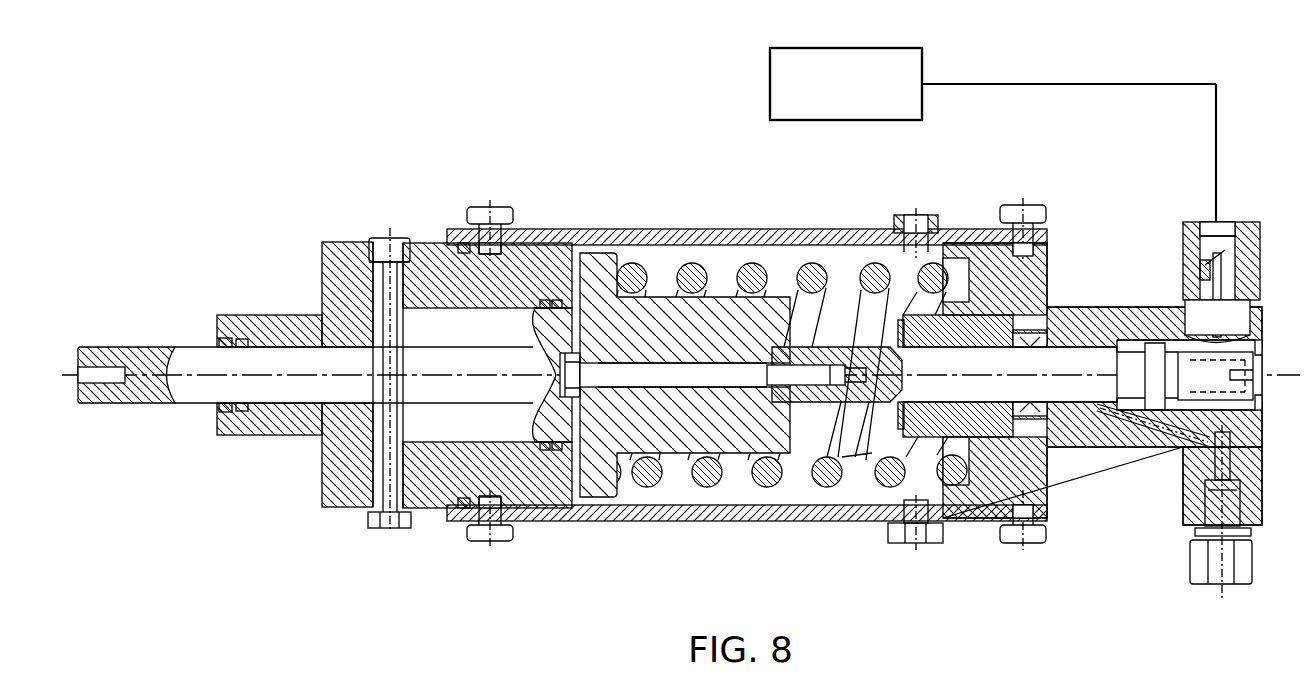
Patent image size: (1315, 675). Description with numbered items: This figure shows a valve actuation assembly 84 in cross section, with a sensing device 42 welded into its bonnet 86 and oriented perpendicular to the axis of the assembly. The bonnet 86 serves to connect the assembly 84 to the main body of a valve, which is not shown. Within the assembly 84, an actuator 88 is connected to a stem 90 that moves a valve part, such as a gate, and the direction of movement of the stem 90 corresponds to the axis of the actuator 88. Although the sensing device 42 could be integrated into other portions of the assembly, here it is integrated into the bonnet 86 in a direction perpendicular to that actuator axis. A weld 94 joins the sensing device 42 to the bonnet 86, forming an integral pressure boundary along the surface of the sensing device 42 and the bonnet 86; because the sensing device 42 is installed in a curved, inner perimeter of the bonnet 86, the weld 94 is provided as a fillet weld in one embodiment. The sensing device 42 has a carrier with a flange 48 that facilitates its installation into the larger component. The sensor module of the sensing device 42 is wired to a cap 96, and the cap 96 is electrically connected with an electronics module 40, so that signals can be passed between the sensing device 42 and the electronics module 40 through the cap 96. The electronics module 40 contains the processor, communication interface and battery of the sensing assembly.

The valve actuation assembly 84 is at (238, 203).
The actuator 88 is at (727, 292).
The stem 90 is at (1081, 389).
The weld 94 is at (1183, 347).
The bonnet 86 is at (1183, 258).
The sensing device 42 is at (1222, 257).
The flange 48 is at (1245, 310).
The cap 96 is at (1222, 222).
The electronics module 40 is at (770, 62).